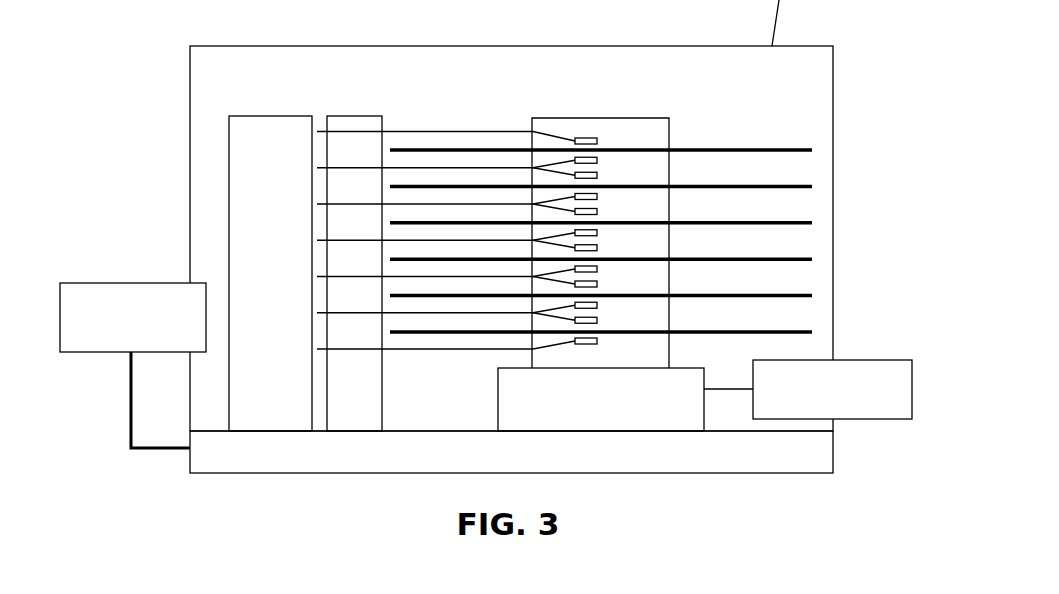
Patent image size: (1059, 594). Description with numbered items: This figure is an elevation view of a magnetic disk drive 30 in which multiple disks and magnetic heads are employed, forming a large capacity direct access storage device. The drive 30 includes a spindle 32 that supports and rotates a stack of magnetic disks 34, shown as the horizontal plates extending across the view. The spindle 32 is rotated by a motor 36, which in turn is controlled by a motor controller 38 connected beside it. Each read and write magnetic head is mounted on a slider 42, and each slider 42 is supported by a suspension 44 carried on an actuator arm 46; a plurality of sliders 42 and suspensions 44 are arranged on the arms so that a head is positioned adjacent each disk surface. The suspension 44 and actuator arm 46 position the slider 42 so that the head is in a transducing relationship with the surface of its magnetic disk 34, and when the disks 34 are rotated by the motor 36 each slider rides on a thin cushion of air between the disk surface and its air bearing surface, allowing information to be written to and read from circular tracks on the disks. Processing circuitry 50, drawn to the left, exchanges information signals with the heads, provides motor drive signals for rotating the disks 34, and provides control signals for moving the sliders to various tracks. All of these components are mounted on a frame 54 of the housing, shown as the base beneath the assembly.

The magnetic disk drive 30 is at (724, 117).
The spindle 32 is at (657, 118).
The magnetic disk 34 is at (805, 151).
The motor 36 is at (590, 411).
The motor controller 38 is at (868, 419).
The slider 42 is at (600, 161).
The suspension 44 is at (573, 141).
The actuator arm 46 is at (530, 167).
The processing circuitry 50 is at (103, 283).
The frame 54 is at (245, 474).